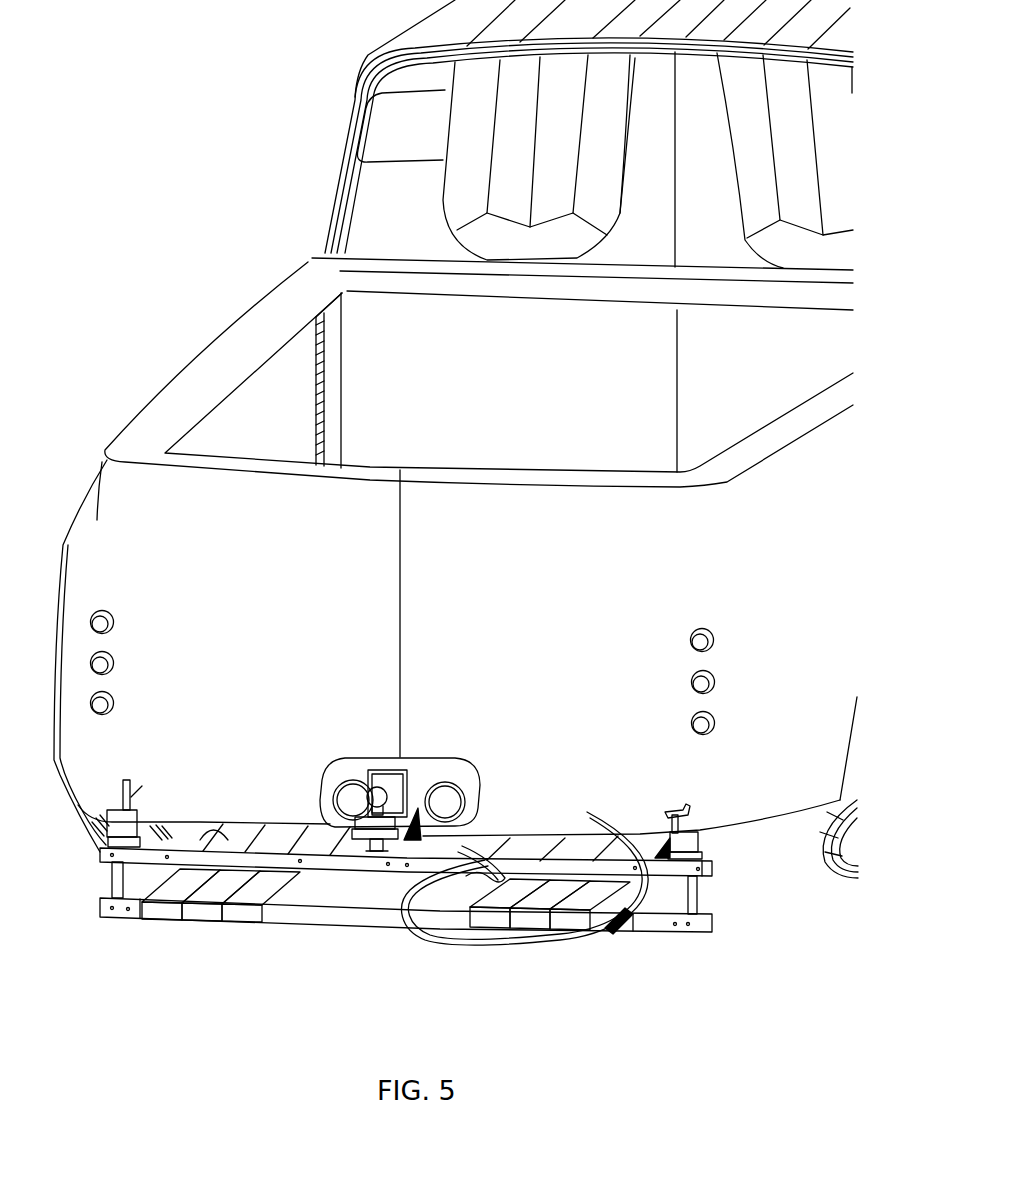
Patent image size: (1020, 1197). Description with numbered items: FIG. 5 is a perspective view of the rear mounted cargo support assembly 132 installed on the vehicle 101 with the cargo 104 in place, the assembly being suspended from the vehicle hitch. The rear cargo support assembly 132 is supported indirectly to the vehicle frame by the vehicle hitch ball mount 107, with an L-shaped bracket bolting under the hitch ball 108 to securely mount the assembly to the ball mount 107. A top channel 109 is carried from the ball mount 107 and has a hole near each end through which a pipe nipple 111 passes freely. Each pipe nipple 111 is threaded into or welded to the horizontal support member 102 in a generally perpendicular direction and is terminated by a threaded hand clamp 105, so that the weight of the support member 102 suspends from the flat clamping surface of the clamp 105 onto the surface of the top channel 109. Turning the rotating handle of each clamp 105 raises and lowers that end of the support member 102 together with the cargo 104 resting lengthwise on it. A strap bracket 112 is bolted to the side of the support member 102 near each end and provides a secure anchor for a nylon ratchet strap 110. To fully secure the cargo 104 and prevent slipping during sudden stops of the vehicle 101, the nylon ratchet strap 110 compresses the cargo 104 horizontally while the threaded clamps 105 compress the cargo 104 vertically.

The vehicle 101 is at (192, 372).
The horizontal support member 102 is at (360, 925).
The cargo 104 is at (568, 842).
The threaded hand clamp 105 is at (107, 810).
The vehicle hitch ball mount 107 is at (355, 828).
The hitch ball 108 is at (362, 772).
The top channel 109 is at (388, 875).
The nylon ratchet strap 110 is at (433, 946).
The pipe nipple 111 is at (110, 880).
The strap bracket 112 is at (628, 916).
The rear cargo support assembly 132 is at (366, 957).